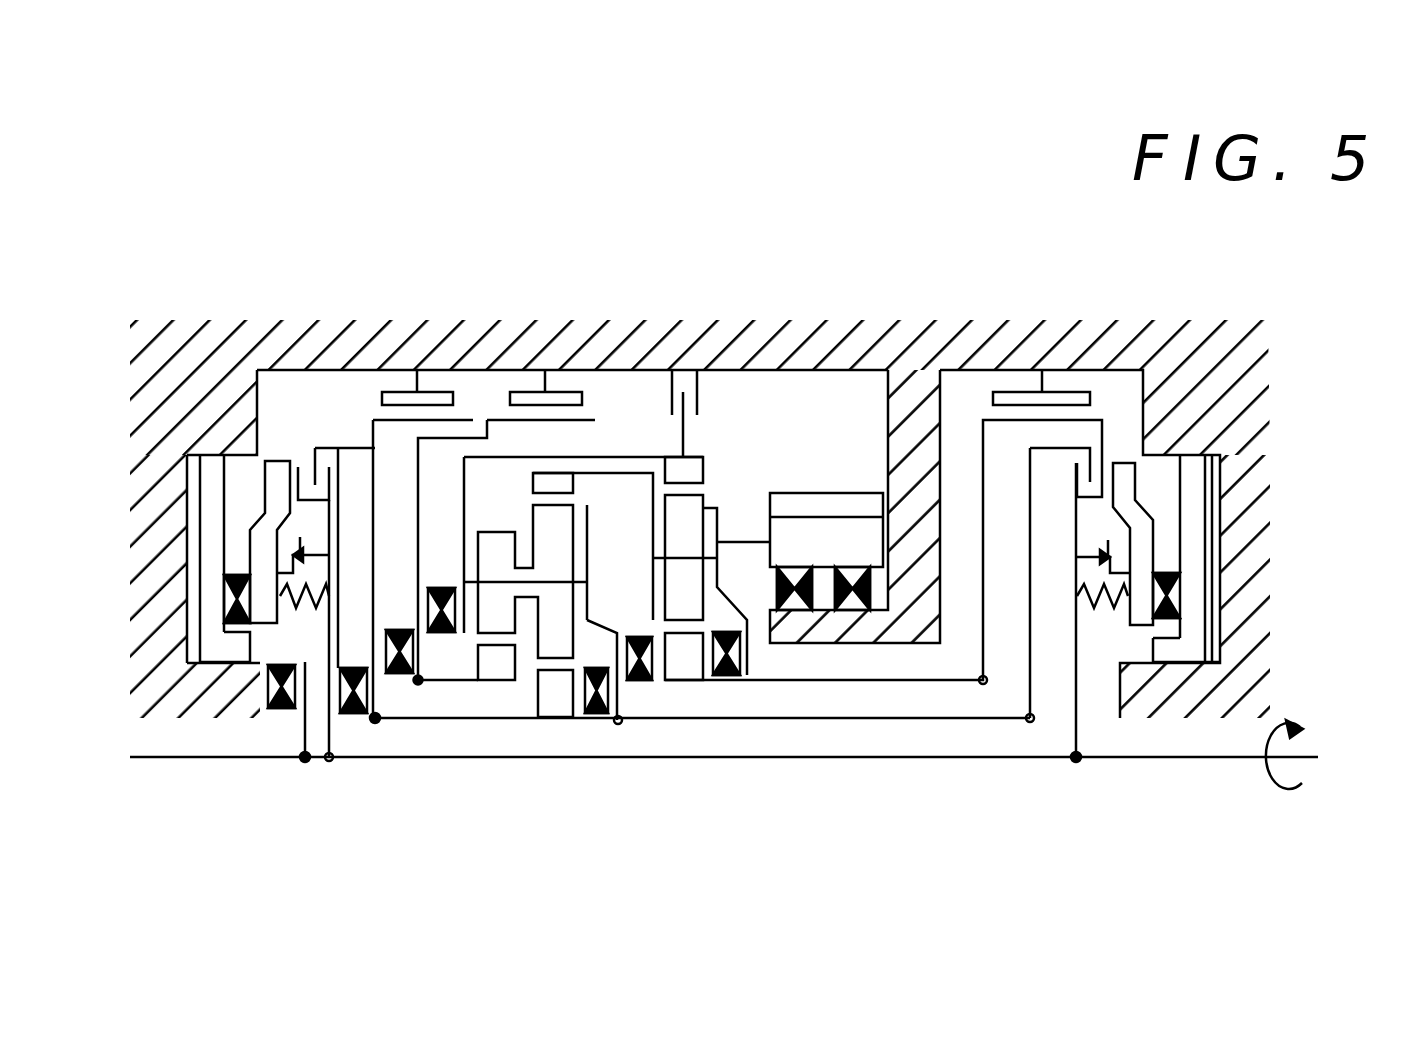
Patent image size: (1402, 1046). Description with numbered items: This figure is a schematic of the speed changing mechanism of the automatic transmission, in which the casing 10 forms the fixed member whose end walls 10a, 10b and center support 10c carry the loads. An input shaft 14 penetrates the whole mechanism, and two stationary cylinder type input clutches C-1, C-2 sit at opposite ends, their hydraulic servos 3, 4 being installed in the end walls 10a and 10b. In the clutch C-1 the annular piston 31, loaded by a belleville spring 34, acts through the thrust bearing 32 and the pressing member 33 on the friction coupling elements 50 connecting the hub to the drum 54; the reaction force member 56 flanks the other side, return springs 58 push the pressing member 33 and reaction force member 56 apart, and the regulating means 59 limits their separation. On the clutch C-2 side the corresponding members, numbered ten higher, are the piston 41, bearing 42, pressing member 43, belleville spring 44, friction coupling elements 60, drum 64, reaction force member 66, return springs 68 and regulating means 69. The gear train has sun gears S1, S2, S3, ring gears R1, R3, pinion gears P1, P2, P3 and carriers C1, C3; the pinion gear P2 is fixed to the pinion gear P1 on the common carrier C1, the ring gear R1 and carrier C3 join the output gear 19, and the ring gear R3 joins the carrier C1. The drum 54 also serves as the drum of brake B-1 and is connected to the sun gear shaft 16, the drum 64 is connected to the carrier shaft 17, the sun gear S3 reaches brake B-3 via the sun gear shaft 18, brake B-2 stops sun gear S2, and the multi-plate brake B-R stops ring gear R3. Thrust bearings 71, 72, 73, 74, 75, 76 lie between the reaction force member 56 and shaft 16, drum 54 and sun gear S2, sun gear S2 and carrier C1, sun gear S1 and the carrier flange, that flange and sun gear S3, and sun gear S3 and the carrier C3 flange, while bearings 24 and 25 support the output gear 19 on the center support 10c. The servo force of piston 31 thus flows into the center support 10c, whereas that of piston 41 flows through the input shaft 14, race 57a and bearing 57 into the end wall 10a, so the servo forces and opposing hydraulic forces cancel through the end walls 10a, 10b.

The casing 10 is at (1272, 363).
The end wall 10a is at (262, 380).
The end wall 10b is at (1152, 382).
The center support 10c is at (900, 408).
The hydraulic servo 3 is at (185, 537).
The hydraulic servo 4 is at (1222, 528).
The input shaft 14 is at (1112, 762).
The sun gear shaft 16 is at (403, 720).
The carrier shaft 17 is at (963, 722).
The sun gear shaft 18 is at (843, 690).
The output gear 19 is at (838, 493).
The bearing 24 is at (803, 612).
The bearing 25 is at (860, 612).
The annular piston 31 is at (187, 540).
The thrust bearing 32 is at (250, 640).
The pressing member 33 is at (258, 512).
The belleville spring 34 is at (185, 598).
The piston 41 is at (1200, 518).
The bearing 42 is at (1172, 585).
The pressing member 43 is at (1148, 522).
The belleville spring 44 is at (1220, 592).
The friction coupling elements 50 is at (316, 460).
The drum 54 is at (322, 449).
The reaction force member 56 is at (338, 635).
The bearing 57 is at (272, 725).
The race 57a is at (305, 762).
The return springs 58 is at (300, 608).
The regulating means 59 is at (308, 553).
The friction coupling elements 60 is at (1076, 463).
The drum 64 is at (1030, 545).
The reaction force member 66 is at (1076, 628).
The return springs 68 is at (1105, 605).
The regulating means 69 is at (1088, 545).
The thrust bearing 71 is at (372, 720).
The thrust bearing 72 is at (398, 630).
The thrust bearing 73 is at (440, 588).
The thrust bearing 74 is at (599, 713).
The thrust bearing 75 is at (642, 680).
The thrust bearing 76 is at (733, 675).
The brake B-1 is at (382, 398).
The brake B-2 is at (583, 398).
The brake B-3 is at (993, 400).
The brake B-R is at (700, 398).
The input clutch C-1 is at (331, 458).
The input clutch C-2 is at (1066, 467).
The carrier C1 is at (588, 575).
The carrier C3 is at (715, 572).
The pinion gear P1 is at (583, 520).
The pinion gear P2 is at (497, 530).
The pinion gear P3 is at (712, 508).
The ring gear R1 is at (580, 473).
The ring gear R3 is at (703, 460).
The sun gear S1 is at (550, 717).
The sun gear S2 is at (490, 680).
The sun gear S3 is at (700, 680).